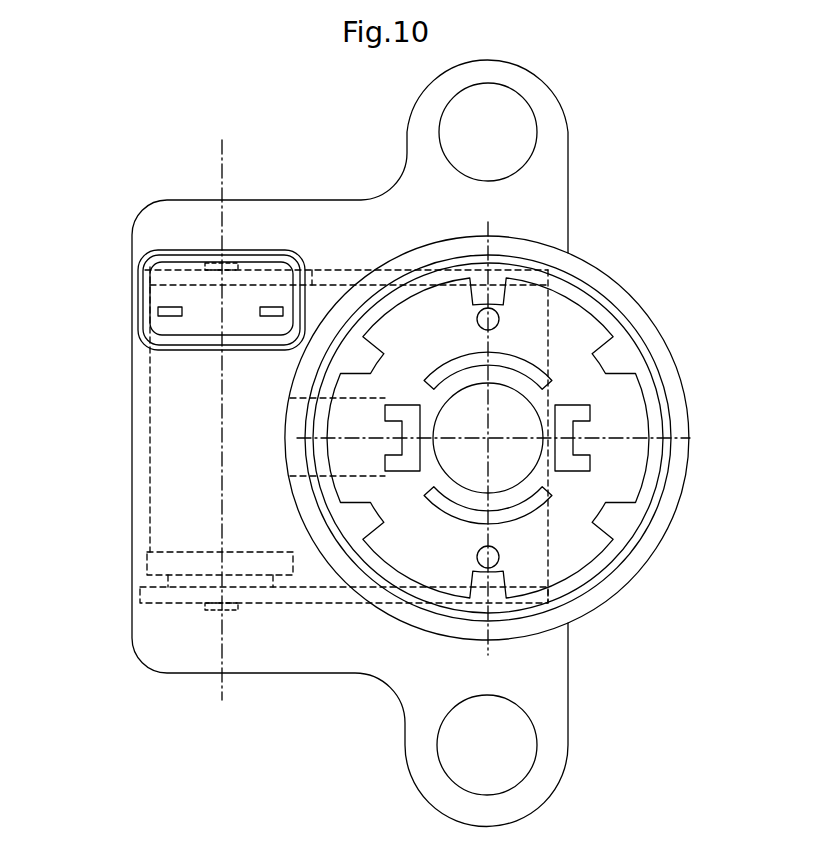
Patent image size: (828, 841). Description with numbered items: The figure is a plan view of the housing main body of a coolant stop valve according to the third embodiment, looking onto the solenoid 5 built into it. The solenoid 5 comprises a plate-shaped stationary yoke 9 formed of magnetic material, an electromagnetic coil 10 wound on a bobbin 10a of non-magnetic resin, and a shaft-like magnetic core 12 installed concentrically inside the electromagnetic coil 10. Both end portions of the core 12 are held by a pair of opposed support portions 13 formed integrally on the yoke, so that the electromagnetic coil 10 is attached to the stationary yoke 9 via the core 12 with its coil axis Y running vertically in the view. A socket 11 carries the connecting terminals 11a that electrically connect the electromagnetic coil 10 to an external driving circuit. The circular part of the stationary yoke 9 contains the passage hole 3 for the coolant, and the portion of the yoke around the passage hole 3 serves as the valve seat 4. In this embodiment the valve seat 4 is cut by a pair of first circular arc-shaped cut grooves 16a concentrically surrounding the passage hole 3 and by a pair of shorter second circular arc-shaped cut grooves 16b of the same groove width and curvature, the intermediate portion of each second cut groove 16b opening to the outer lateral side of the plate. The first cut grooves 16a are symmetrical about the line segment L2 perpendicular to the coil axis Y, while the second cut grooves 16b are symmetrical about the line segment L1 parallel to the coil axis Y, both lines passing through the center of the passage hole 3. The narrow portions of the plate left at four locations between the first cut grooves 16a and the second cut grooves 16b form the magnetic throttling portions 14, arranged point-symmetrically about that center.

The solenoid 5 is at (138, 457).
The electromagnetic coil 10 is at (152, 430).
The bobbin 10a is at (155, 565).
The stationary yoke 9 is at (307, 578).
The core 12 is at (213, 611).
The support portions 13 is at (191, 276).
The socket 11 is at (153, 256).
The connecting terminals 11a is at (273, 306).
The valve seat 4 is at (542, 522).
The passage hole 3 is at (513, 420).
The first circular arc-shaped cut grooves 16a is at (523, 367).
The magnetic throttling portions 14 is at (408, 394).
The second circular arc-shaped cut grooves 16b is at (412, 455).
The coil axis Y is at (220, 410).
The line segment L1 is at (490, 248).
The line segment L2 is at (338, 440).